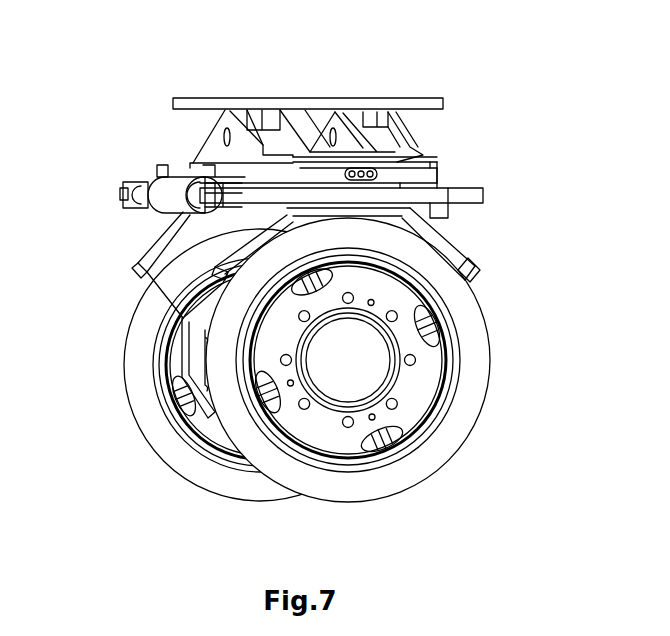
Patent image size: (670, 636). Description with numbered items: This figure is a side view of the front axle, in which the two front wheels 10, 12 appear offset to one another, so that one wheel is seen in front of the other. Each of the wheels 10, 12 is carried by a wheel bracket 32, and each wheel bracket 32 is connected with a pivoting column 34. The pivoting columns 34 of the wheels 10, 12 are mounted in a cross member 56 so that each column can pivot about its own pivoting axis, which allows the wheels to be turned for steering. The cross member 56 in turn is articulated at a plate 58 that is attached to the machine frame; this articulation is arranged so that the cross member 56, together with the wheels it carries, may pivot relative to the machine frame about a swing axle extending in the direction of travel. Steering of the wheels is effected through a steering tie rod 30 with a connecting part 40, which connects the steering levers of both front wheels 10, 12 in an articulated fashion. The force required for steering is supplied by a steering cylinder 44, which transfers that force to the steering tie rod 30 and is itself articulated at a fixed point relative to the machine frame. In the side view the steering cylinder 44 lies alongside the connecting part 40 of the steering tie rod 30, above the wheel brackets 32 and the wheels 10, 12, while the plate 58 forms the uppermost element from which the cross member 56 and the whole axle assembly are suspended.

The front wheel 10 is at (476, 343).
The front wheel 12 is at (137, 342).
The steering tie rod 30 is at (516, 188).
The wheel bracket 32 is at (463, 252).
The pivoting column 34 is at (393, 147).
The connecting part 40 is at (473, 197).
The steering cylinder 44 is at (168, 200).
The cross member 56 is at (438, 170).
The plate 58 is at (290, 104).